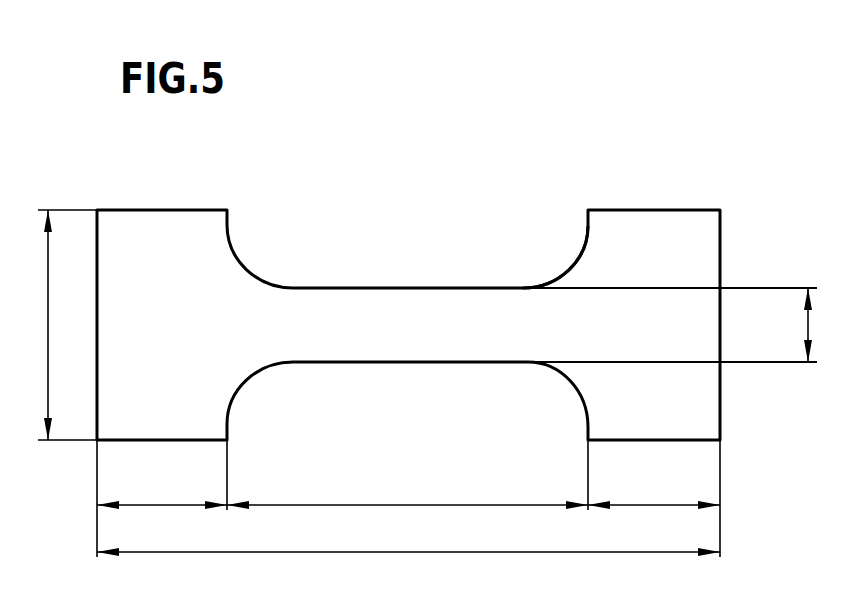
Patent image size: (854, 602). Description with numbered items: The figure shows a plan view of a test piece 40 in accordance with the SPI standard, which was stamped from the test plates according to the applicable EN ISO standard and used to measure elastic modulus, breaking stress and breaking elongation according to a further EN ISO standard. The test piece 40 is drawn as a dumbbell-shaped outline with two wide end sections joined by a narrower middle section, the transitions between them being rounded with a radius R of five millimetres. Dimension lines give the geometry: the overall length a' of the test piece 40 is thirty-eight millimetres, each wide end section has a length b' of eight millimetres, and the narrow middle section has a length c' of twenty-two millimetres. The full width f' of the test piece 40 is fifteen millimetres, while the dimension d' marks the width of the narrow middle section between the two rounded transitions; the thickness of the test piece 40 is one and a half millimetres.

The test piece 40 is at (622, 163).
The radius R is at (560, 255).
The overall length dimension a' is at (408, 534).
The end section dimension b' is at (408, 487).
The middle section dimension c' is at (407, 487).
The gauge section width d' is at (790, 325).
The overall width dimension f' is at (33, 325).